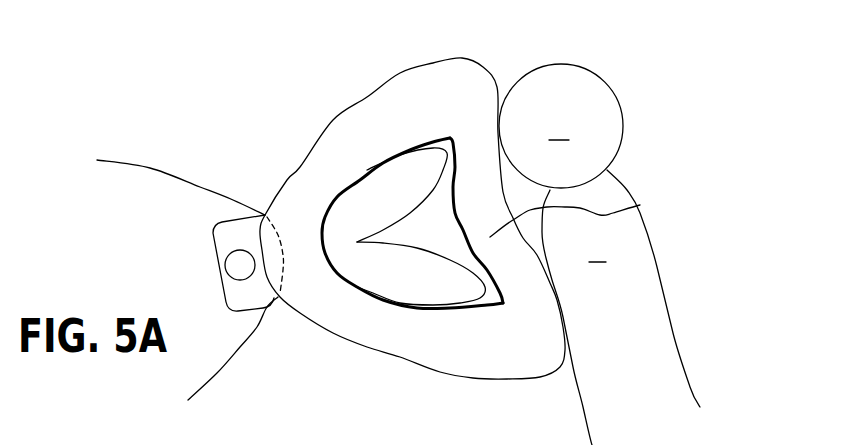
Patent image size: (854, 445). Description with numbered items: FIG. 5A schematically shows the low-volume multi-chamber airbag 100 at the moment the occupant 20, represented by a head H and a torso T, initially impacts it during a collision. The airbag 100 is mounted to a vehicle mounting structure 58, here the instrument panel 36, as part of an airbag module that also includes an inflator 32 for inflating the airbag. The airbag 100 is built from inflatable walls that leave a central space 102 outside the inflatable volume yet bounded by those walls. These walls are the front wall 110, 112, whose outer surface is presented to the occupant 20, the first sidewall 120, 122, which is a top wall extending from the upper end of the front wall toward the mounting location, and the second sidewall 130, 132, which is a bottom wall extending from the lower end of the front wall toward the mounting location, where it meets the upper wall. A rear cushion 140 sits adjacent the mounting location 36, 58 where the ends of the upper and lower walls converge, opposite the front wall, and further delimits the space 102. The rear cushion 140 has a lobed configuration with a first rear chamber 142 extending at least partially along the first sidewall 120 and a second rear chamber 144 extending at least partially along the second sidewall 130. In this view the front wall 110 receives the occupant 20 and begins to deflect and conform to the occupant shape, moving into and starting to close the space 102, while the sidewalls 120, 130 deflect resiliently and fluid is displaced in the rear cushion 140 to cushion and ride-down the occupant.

The occupant 20 is at (640, 145).
The inflator 32 is at (233, 267).
The instrument panel 36 is at (187, 243).
The vehicle mounting structure 58 is at (133, 185).
The airbag 100 is at (410, 206).
The central space 102 is at (490, 322).
The front wall 110 is at (623, 210).
The contact surface portion 112 is at (640, 205).
The first sidewall 120 is at (410, 223).
The pad body portion 122 is at (410, 223).
The second sidewall 130 is at (410, 223).
The pad lower portion 132 is at (400, 333).
The rear cushion 140 is at (340, 242).
The first rear chamber 142 is at (380, 193).
The second rear chamber 144 is at (400, 280).